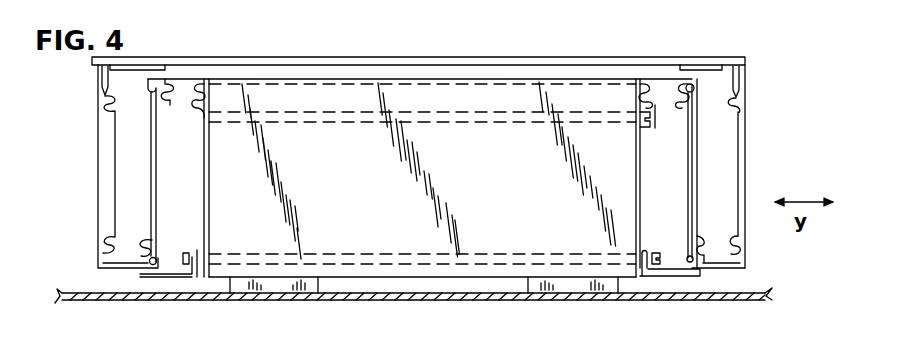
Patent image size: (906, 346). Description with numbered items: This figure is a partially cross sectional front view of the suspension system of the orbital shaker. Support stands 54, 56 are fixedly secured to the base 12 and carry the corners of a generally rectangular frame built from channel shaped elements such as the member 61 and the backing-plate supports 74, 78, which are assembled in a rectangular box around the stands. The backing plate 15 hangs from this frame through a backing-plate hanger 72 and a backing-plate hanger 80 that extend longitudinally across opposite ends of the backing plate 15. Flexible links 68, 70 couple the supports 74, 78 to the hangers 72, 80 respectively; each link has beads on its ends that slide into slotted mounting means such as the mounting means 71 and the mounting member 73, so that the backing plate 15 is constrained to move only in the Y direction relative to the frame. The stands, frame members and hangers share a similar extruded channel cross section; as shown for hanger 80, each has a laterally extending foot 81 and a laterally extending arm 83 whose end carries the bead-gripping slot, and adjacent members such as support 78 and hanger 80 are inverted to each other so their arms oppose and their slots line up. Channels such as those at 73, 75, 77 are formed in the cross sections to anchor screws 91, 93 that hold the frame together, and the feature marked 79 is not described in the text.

The backing plate 15 is at (370, 57).
The laterally extending foot 81 is at (716, 70).
The backing-plate hanger 72 is at (96, 177).
The flexible link 68 is at (151, 207).
The backing-plate support 74 is at (203, 193).
The mounting means 71 is at (160, 253).
The channel shaped element 61 is at (453, 271).
The support stand 56 is at (290, 292).
The support stand 54 is at (545, 296).
The base 12 is at (655, 301).
The screw 93 is at (660, 264).
The channel 77 is at (648, 240).
The mounting member 73 is at (656, 258).
The backing-plate support 78 is at (641, 190).
The serrated flange 79 is at (677, 108).
The channel 75 is at (654, 117).
The screw 91 is at (640, 125).
The flexible link 70 is at (698, 180).
The backing-plate hanger 80 is at (744, 172).
The laterally extending arm 83 is at (733, 268).